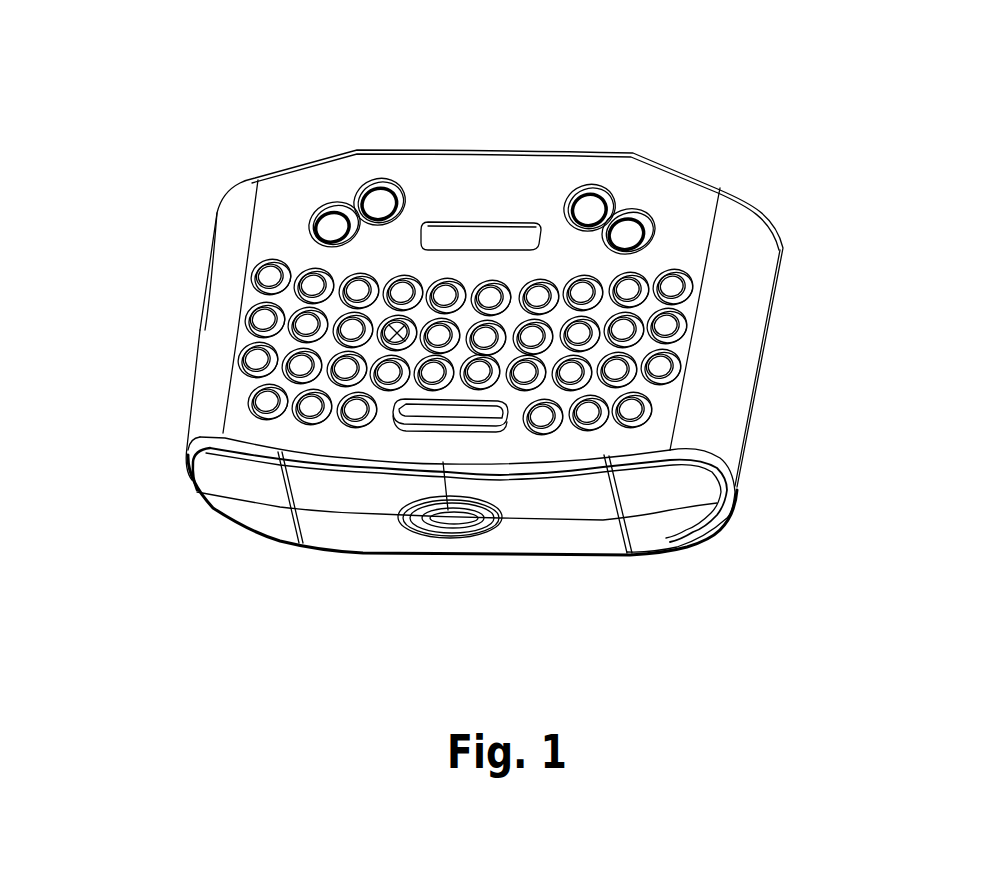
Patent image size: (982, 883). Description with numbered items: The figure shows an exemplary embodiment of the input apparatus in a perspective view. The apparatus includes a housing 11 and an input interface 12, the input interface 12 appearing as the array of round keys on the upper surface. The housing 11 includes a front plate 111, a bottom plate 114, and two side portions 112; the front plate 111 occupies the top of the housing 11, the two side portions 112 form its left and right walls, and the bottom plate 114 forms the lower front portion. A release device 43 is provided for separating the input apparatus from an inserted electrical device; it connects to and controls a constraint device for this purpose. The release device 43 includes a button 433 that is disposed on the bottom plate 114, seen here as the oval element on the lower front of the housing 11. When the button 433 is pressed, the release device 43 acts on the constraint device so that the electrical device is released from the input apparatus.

The housing 11 is at (495, 168).
The front plate 111 is at (637, 187).
The side portions 112 is at (205, 267).
The bottom plate 114 is at (608, 525).
The input interface 12 is at (243, 407).
The release device 43 is at (423, 533).
The button 433 is at (457, 530).